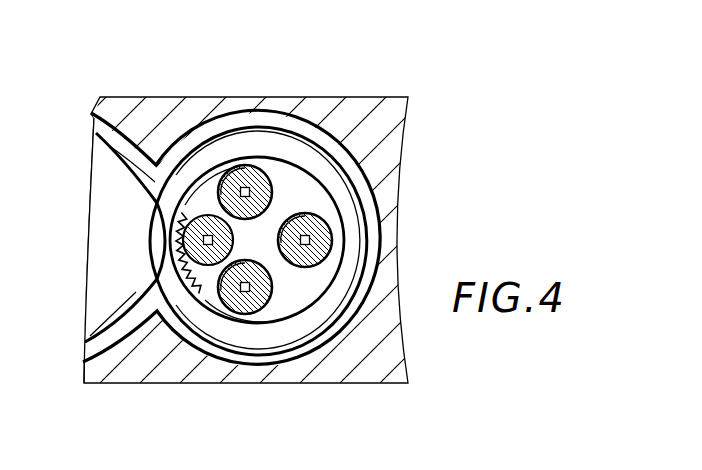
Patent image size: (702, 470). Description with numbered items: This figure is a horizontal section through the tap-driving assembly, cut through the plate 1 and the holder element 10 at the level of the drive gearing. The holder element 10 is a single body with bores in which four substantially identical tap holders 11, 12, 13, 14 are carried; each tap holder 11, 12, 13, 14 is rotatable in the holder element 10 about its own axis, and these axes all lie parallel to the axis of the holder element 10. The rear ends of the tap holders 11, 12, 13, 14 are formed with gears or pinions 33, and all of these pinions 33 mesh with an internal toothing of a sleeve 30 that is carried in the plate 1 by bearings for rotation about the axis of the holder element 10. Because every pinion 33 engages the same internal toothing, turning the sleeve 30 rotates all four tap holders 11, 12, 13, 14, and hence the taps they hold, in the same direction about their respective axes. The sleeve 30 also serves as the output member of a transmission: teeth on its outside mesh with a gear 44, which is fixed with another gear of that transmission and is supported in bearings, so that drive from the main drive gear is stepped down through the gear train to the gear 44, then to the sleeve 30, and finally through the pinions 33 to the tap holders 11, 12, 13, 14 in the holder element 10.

The plate 1 is at (383, 345).
The holder element 10 is at (293, 203).
The tap holder 11 is at (200, 294).
The tap holder 12 is at (268, 170).
The tap holder 13 is at (333, 237).
The tap holder 14 is at (266, 302).
The sleeve 30 is at (178, 207).
The gears or pinions 33 is at (243, 165).
The gear 44 is at (113, 168).